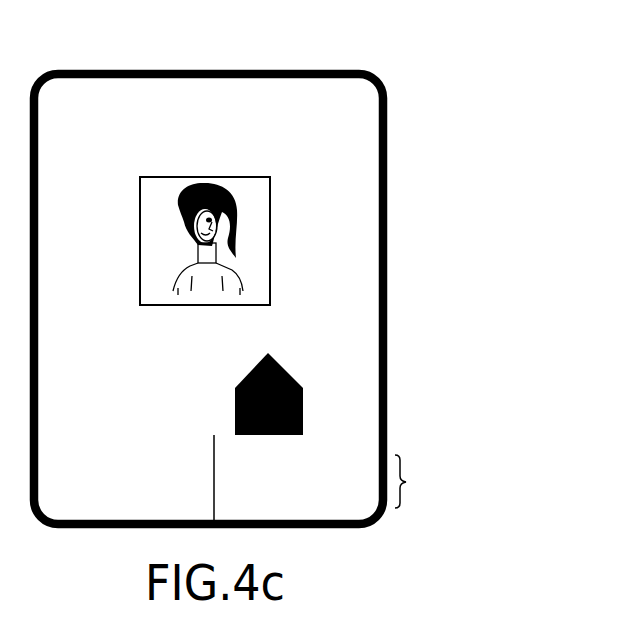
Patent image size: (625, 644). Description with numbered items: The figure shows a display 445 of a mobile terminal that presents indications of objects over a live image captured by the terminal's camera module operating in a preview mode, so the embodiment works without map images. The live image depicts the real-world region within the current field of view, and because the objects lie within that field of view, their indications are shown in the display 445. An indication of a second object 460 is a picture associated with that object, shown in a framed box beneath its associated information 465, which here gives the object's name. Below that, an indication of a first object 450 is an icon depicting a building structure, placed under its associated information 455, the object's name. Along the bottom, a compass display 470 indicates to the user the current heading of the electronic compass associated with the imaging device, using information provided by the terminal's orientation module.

The display 445 is at (285, 73).
The associated information 465 is at (314, 161).
The indication of a second object 460 is at (290, 239).
The associated information 455 is at (362, 342).
The indication of a first object 450 is at (318, 406).
The compass display 470 is at (422, 482).